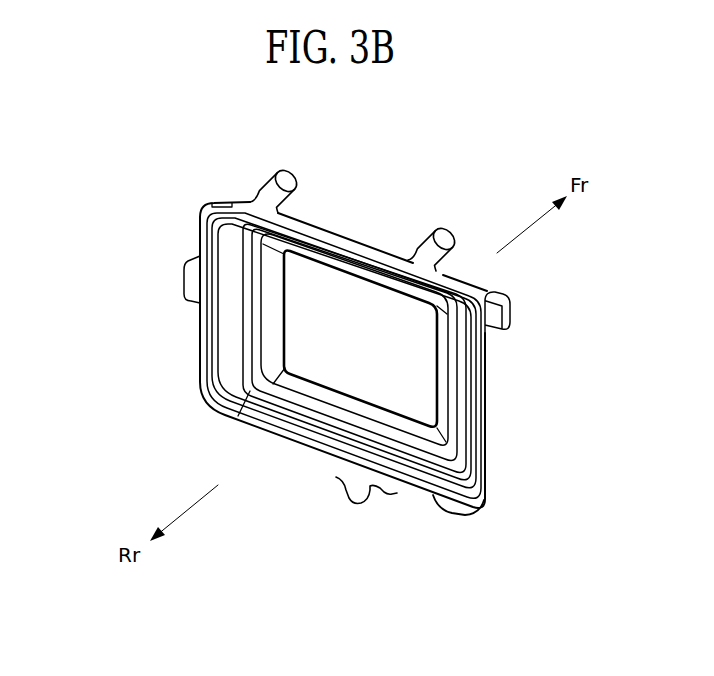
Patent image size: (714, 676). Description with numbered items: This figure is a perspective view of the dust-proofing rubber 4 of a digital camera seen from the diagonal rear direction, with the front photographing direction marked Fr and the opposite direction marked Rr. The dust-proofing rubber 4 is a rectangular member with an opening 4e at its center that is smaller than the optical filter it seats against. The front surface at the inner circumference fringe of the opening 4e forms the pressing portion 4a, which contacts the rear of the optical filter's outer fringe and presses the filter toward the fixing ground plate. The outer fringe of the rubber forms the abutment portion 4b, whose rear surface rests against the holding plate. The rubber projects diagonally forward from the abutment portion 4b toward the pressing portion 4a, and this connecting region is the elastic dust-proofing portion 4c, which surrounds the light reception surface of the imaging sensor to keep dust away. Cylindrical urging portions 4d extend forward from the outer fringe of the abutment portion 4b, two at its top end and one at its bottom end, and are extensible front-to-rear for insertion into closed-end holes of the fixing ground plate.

The dust-proofing rubber 4 is at (170, 389).
The pressing portion 4a is at (286, 328).
The abutment portion 4b is at (312, 465).
The dust-proofing portion 4c is at (268, 422).
The urging portion 4d is at (283, 175).
The opening 4e is at (400, 377).